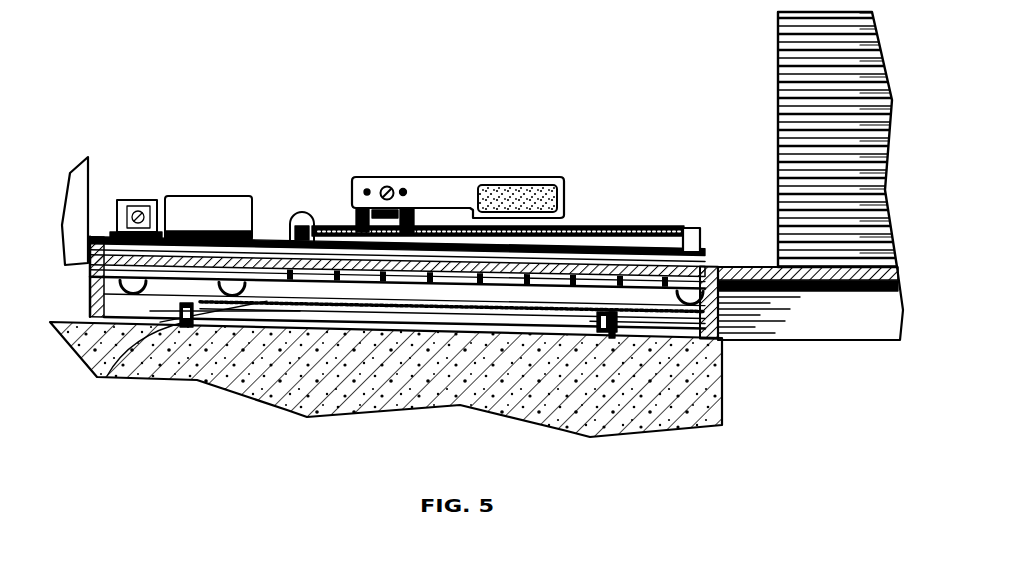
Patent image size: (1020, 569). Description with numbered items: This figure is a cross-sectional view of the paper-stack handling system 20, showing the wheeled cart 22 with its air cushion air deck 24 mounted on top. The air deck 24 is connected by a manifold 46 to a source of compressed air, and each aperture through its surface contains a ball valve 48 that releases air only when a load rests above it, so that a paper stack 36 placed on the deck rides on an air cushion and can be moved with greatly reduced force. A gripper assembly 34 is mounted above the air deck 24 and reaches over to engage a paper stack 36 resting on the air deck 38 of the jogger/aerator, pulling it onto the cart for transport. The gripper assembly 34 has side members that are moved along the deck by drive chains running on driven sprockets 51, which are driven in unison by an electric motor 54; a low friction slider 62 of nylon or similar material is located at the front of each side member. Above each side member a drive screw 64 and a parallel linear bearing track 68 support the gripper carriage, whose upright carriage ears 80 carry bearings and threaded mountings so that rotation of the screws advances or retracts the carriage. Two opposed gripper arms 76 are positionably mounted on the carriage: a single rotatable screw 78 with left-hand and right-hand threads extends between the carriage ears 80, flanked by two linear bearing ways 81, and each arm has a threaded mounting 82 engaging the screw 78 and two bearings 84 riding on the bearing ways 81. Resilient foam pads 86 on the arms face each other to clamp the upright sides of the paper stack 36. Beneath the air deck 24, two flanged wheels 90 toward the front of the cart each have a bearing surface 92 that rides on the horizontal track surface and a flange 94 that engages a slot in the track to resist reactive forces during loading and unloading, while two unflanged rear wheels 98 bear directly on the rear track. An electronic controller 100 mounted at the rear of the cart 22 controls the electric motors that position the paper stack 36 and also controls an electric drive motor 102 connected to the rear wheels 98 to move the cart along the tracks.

The system 20 is at (135, 173).
The wheeled cart 22 is at (278, 243).
The air cushion air deck 24 is at (668, 228).
The gripper assembly 34 is at (343, 150).
The paper stack 36 is at (777, 84).
The air deck of the jogger/aerator 38 is at (774, 262).
The manifold 46 is at (477, 291).
The ball valve 48 is at (292, 226).
The driven sprockets 51 is at (267, 297).
The electric motor 54 is at (196, 197).
The low friction slider 62 is at (700, 264).
The drive screw 64 is at (594, 228).
The linear bearing track 68 is at (634, 227).
The gripper arms 76 is at (466, 177).
The rotatable screw 78 is at (389, 187).
The carriage ears 80 is at (355, 212).
The linear bearing ways 81 is at (406, 190).
The threaded mounting 82 is at (392, 190).
The bearings 84 is at (407, 192).
The resilient foam pads 86 is at (538, 185).
The flanged wheels 90 is at (640, 328).
The bearing surface 92 is at (618, 338).
The flange 94 is at (608, 338).
The rear wheels 98 is at (107, 378).
The electronic controller 100 is at (93, 185).
The electric drive motor 102 is at (347, 303).